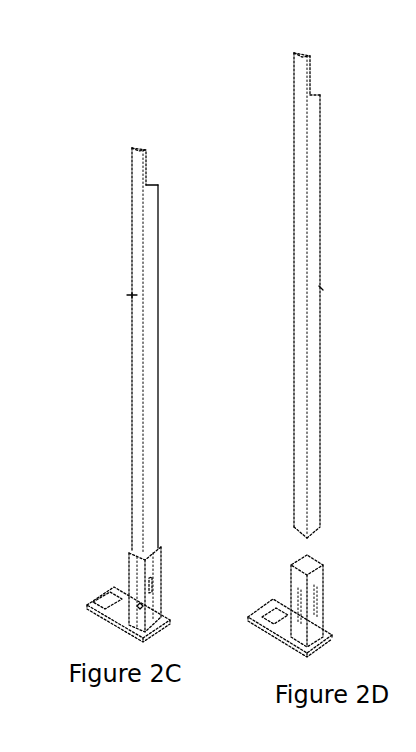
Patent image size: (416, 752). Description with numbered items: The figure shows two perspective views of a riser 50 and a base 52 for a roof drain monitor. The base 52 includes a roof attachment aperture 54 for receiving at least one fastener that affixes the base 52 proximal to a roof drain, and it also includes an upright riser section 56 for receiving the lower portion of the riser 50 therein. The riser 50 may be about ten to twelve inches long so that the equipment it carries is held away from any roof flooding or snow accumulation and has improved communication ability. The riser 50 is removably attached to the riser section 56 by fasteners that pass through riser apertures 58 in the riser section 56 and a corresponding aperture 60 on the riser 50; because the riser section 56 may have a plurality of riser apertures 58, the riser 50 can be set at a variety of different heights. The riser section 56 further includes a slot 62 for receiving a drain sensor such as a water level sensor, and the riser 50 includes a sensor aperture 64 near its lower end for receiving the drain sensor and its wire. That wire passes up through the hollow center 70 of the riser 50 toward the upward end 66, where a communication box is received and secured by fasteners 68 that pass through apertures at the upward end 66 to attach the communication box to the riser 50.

In FIG. 2C, the riser 50 is at (157, 378).
In FIG. 2D, the riser 50 is at (319, 388).
In FIG. 2C, the base 52 is at (108, 590).
In FIG. 2D, the base 52 is at (323, 578).
In FIG. 2C, the roof attachment aperture 54 is at (110, 603).
In FIG. 2C, the riser section 56 is at (128, 560).
In FIG. 2C, the riser apertures 58 is at (150, 587).
In FIG. 2D, the aperture 60 is at (312, 518).
In FIG. 2C, the slot 62 is at (140, 607).
In FIG. 2D, the sensor aperture 64 is at (298, 523).
In FIG. 2C, the upward end 66 is at (132, 160).
In FIG. 2D, the upward end 66 is at (293, 72).
In FIG. 2C, the fasteners 68 is at (138, 150).
In FIG. 2D, the fasteners 68 is at (303, 55).
In FIG. 2C, the hollow center 70 is at (148, 180).
In FIG. 2D, the hollow center 70 is at (313, 90).